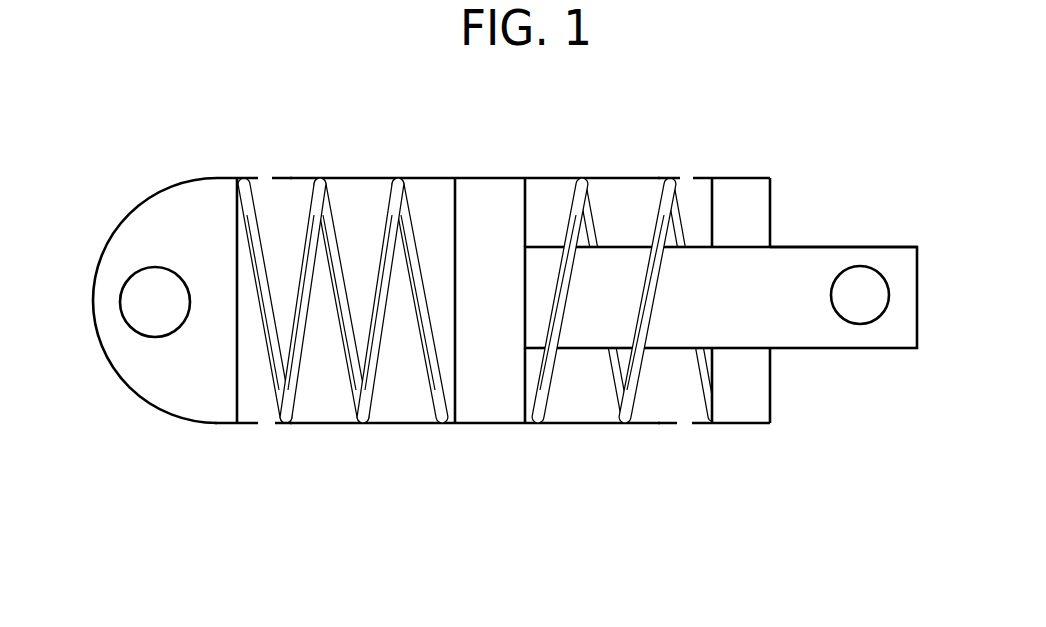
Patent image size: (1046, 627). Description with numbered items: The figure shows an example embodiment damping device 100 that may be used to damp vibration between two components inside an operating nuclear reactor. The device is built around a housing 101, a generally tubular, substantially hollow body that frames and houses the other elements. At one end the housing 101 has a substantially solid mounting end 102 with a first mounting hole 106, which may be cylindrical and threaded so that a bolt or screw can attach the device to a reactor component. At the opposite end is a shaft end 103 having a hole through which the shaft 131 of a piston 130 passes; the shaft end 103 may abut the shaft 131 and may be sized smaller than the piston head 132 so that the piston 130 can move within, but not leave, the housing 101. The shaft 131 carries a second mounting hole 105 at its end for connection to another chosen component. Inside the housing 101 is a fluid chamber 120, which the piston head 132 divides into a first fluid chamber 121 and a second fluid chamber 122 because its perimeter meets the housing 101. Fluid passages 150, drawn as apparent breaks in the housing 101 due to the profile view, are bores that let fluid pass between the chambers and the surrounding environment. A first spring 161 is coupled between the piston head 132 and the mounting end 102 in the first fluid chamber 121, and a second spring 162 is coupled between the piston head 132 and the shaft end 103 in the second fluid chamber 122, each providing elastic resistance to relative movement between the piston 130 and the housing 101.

The damping device 100 is at (785, 467).
The housing 101 is at (615, 173).
The mounting end 102 is at (122, 390).
The shaft end 103 is at (778, 168).
The second mounting hole 105 is at (857, 278).
The first mounting hole 106 is at (148, 300).
The fluid chamber 120 is at (612, 503).
The first fluid chamber 121 is at (320, 395).
The second fluid chamber 122 is at (598, 395).
The piston 130 is at (762, 332).
The shaft 131 is at (782, 250).
The piston head 132 is at (491, 203).
The fluid passage 150 is at (255, 165).
The first spring 161 is at (337, 205).
The second spring 162 is at (557, 197).